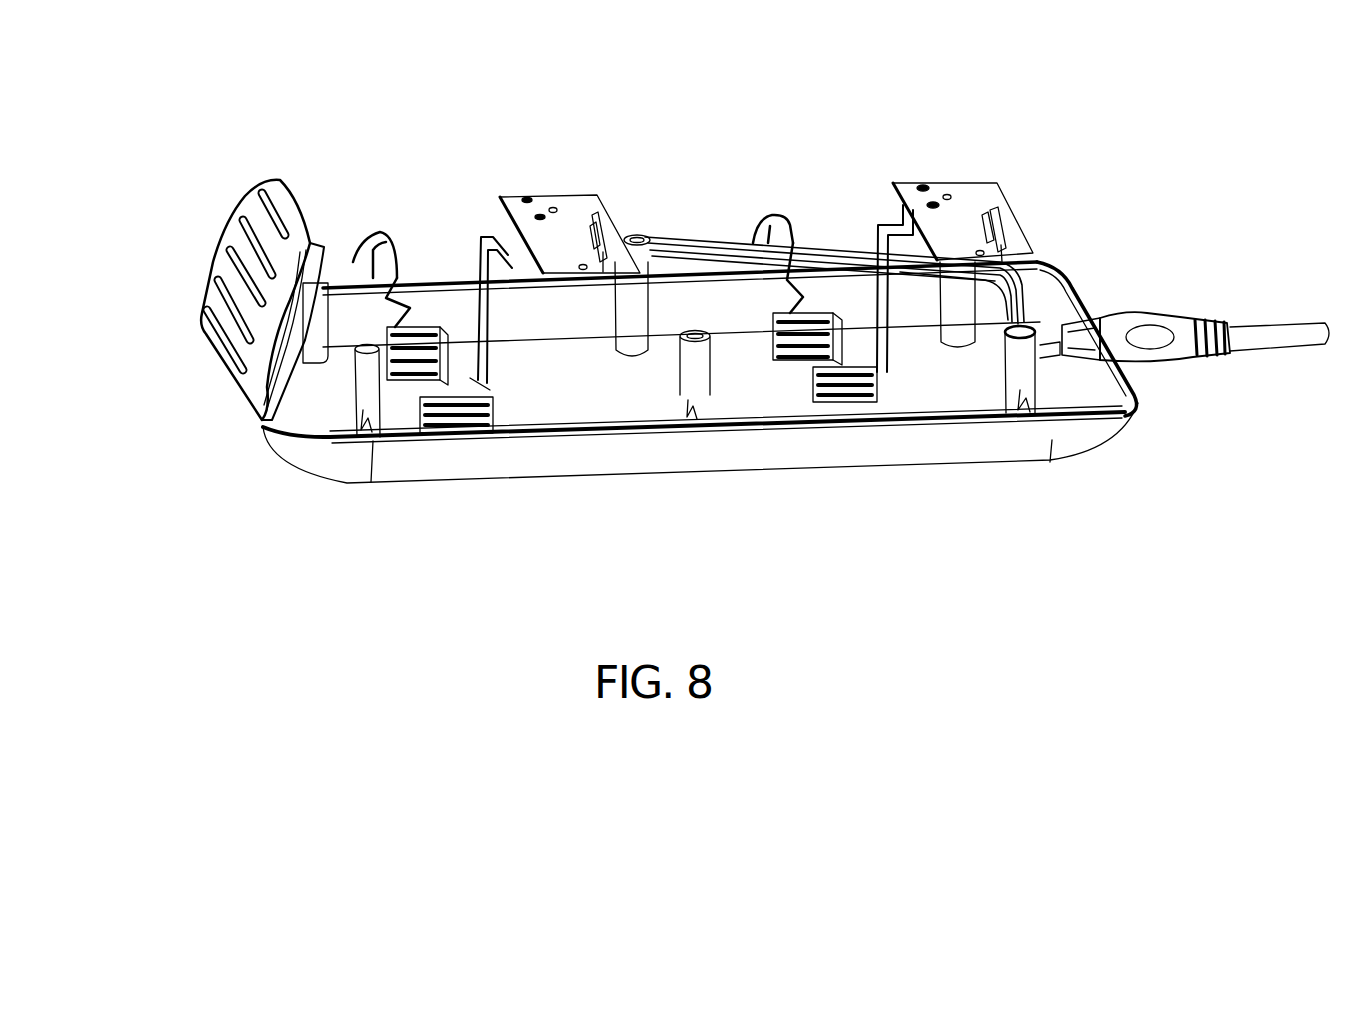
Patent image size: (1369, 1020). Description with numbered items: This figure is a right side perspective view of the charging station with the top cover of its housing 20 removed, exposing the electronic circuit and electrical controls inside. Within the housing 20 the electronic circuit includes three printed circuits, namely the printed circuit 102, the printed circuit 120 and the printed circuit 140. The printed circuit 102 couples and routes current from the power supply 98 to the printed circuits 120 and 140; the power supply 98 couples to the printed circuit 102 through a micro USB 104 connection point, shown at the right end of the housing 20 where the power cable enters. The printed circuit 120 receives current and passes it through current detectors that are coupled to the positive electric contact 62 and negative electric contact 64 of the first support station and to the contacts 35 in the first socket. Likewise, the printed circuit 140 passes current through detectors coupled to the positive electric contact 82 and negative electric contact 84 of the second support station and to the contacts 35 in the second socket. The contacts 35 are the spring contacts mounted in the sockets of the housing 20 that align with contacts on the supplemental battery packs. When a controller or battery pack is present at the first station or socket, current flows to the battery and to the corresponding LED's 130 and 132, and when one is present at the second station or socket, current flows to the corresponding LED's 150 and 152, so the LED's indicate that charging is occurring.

The housing 20 is at (690, 463).
The contacts 35 is at (405, 285).
The positive electric contact 62 is at (605, 233).
The negative electric contact 64 is at (597, 227).
The positive electric contact 82 is at (1000, 213).
The negative electric contact 84 is at (995, 187).
The power supply 98 is at (1262, 337).
The printed circuit 102 is at (1060, 352).
The micro USB connection point 104 is at (1085, 330).
The printed circuit 120 is at (580, 234).
The LED 130 is at (198, 244).
The LED 132 is at (223, 253).
The printed circuit 140 is at (975, 208).
The LED 150 is at (212, 287).
The LED 152 is at (203, 313).